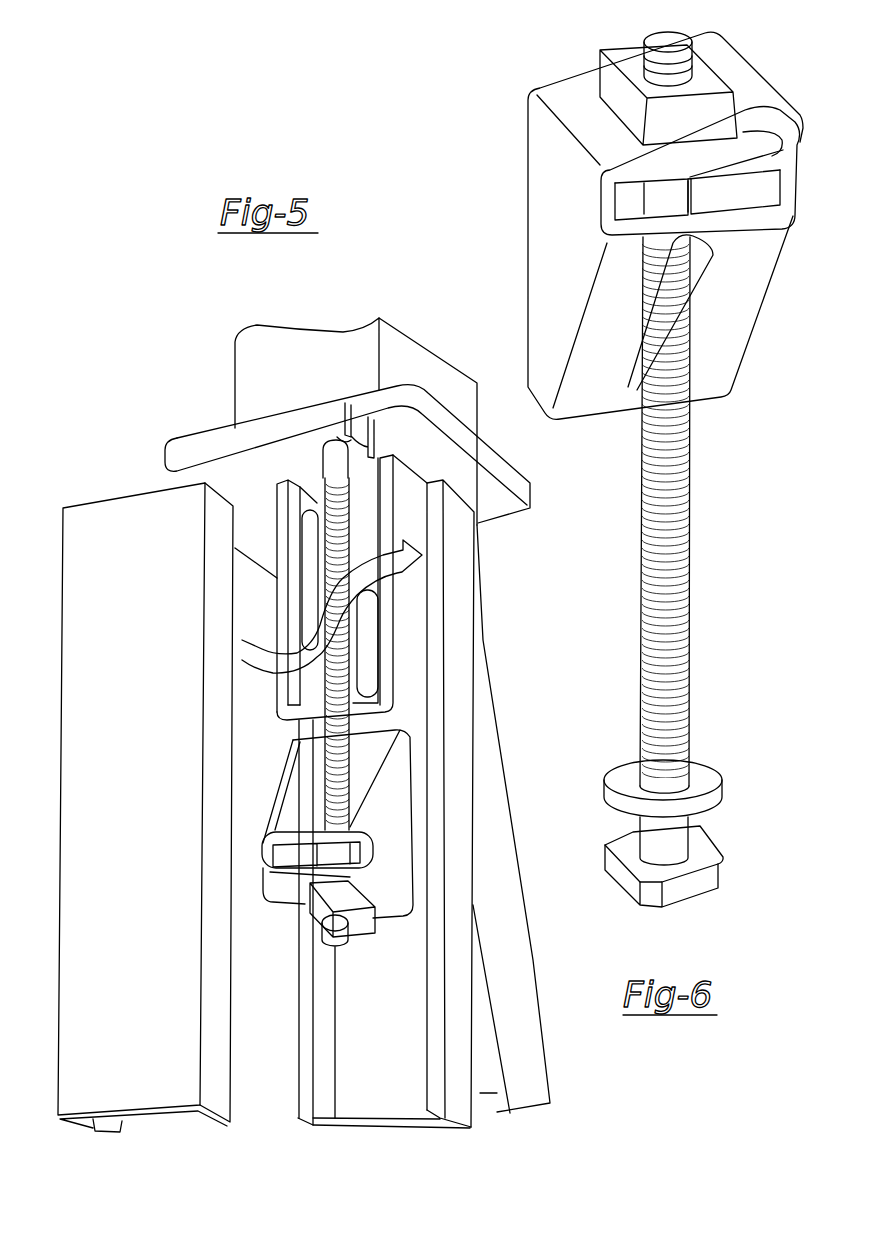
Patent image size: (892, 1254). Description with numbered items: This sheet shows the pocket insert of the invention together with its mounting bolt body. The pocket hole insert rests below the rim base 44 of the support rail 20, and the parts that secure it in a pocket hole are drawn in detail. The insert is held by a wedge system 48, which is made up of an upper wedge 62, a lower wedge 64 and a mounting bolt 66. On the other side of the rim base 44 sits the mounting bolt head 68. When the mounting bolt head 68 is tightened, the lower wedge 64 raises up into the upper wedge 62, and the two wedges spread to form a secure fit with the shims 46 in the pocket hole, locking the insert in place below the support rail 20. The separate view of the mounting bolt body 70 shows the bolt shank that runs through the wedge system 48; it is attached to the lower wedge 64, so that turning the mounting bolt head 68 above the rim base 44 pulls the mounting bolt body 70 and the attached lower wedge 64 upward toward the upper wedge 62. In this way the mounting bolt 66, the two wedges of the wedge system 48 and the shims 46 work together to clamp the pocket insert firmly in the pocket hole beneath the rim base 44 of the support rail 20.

In FIG. 5, the support rail 20 is at (400, 350).
In FIG. 5, the rim base 44 is at (180, 423).
In FIG. 5, the shims 46 is at (453, 1103).
In FIG. 5, the wedge system 48 is at (140, 719).
In FIG. 5, the upper wedge 62 is at (417, 594).
In FIG. 5, the lower wedge 64 is at (398, 833).
In FIG. 6, the lower wedge 64 is at (538, 138).
In FIG. 5, the mounting bolt 66 is at (323, 410).
In FIG. 6, the mounting bolt 66 is at (612, 700).
In FIG. 5, the mounting bolt head 68 is at (452, 400).
In FIG. 6, the mounting bolt head 68 is at (700, 853).
In FIG. 5, the mounting bolt body 70 is at (303, 728).
In FIG. 6, the mounting bolt body 70 is at (687, 540).